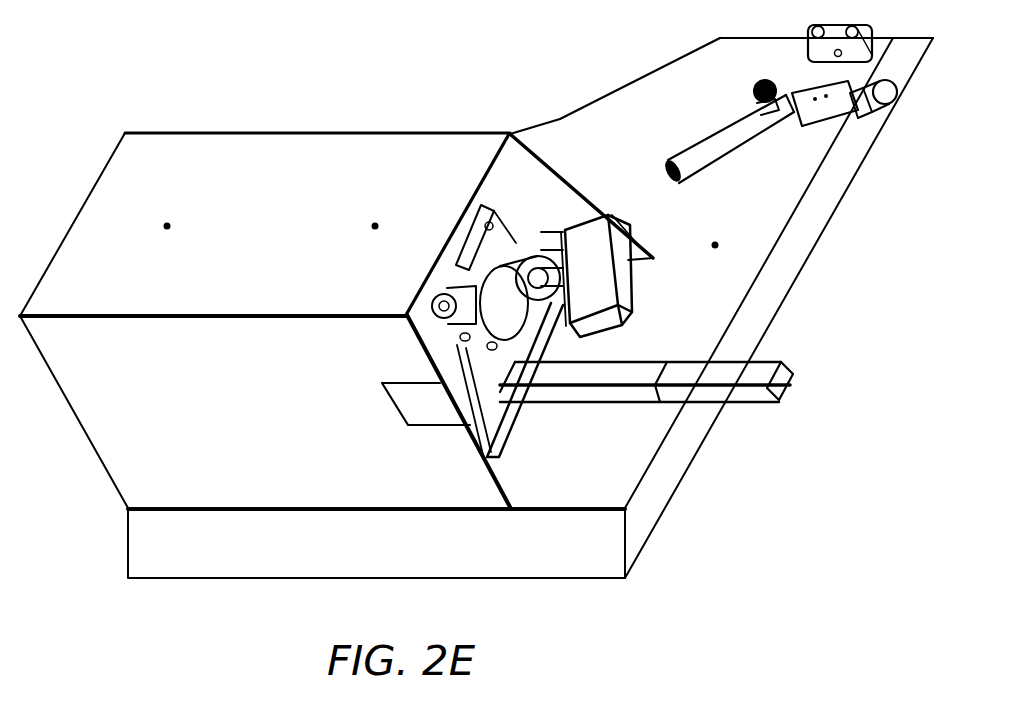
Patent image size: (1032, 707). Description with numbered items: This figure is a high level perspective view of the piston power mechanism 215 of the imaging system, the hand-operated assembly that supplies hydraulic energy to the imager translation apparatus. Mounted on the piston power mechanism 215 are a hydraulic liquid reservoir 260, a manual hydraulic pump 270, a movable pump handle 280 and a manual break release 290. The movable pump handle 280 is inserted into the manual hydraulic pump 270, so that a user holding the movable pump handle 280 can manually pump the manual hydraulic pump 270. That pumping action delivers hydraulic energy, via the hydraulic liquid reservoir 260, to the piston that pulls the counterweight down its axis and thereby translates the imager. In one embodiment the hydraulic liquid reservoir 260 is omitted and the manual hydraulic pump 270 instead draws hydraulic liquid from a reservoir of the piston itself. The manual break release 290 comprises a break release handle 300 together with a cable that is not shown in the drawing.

The piston power mechanism 215 is at (105, 52).
The hydraulic liquid reservoir 260 is at (473, 375).
The manual hydraulic pump 270 is at (587, 247).
The movable pump handle 280 is at (766, 378).
The manual break release 290 is at (710, 140).
The break release handle 300 is at (888, 110).